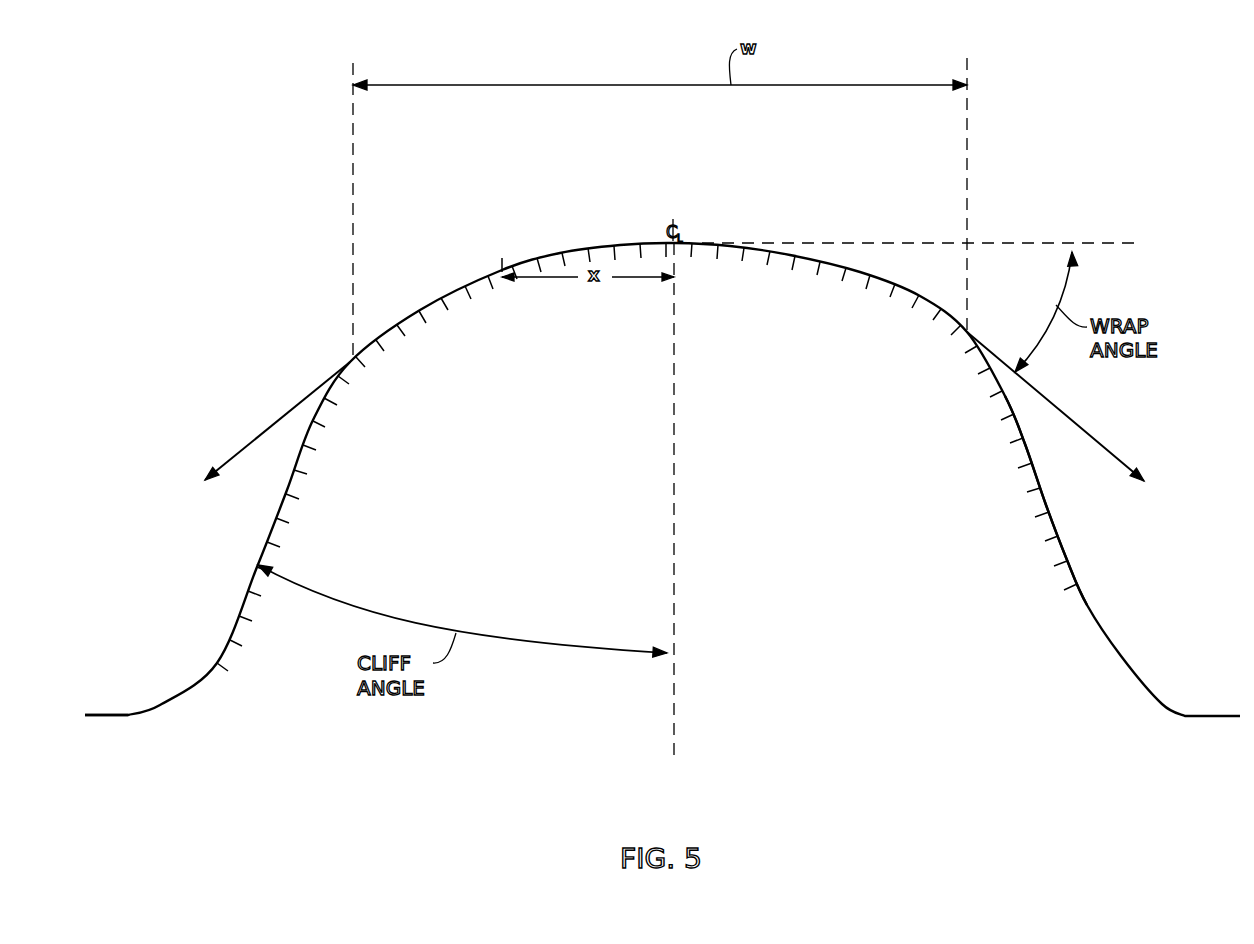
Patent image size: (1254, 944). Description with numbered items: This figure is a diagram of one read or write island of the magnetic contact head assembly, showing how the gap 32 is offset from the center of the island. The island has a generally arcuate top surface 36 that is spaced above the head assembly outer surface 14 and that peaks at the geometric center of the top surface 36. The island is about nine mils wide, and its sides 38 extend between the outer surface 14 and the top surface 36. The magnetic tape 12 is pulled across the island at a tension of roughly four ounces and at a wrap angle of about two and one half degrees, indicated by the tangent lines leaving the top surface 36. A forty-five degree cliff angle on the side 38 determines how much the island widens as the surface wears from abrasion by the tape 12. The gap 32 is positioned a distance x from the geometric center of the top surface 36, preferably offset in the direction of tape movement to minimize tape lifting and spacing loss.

The magnetic tape 12 is at (243, 445).
The outer surface 14 is at (128, 715).
The gap 32 is at (502, 268).
The top surface 36 is at (880, 290).
The sides 38 is at (1049, 492).